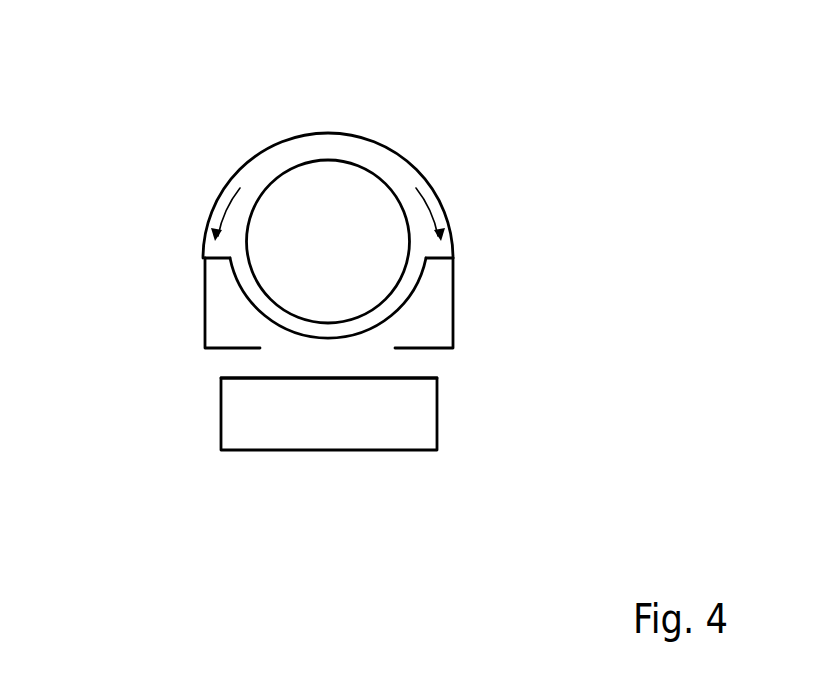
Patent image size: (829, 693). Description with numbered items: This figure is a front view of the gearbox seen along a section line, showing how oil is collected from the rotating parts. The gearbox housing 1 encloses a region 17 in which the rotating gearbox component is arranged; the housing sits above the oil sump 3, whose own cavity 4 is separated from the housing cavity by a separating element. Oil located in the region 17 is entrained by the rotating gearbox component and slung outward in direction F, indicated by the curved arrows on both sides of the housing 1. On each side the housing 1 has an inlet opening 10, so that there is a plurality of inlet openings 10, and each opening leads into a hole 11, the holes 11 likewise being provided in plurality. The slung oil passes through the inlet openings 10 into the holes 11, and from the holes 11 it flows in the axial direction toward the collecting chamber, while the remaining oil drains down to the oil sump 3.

The gearbox housing 1 is at (347, 135).
The oil sump 3 is at (357, 450).
The cavity of the oil sump 4 is at (277, 432).
The inlet opening 10 is at (212, 253).
The hole 11 is at (222, 317).
The region 17 is at (318, 353).
The direction of oil slinging F is at (228, 207).